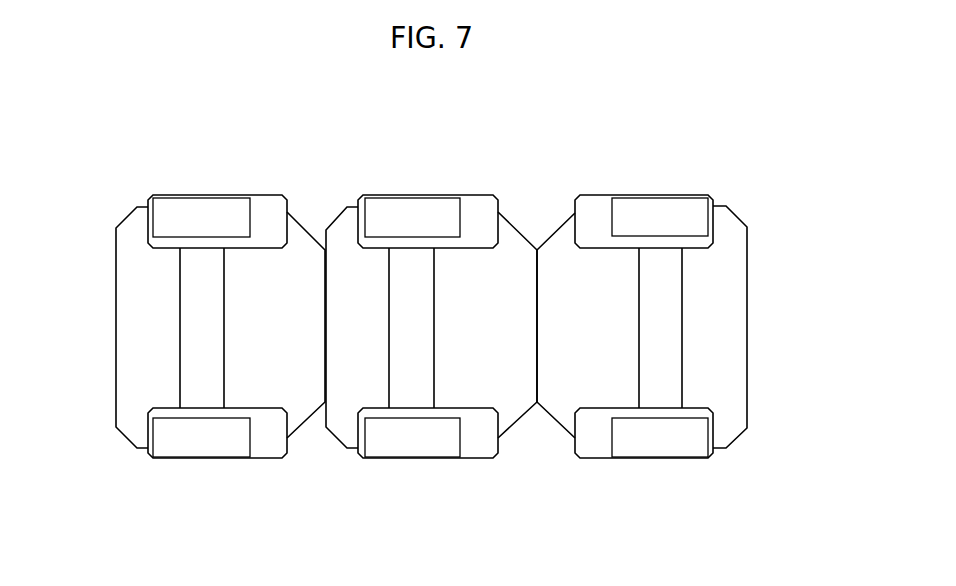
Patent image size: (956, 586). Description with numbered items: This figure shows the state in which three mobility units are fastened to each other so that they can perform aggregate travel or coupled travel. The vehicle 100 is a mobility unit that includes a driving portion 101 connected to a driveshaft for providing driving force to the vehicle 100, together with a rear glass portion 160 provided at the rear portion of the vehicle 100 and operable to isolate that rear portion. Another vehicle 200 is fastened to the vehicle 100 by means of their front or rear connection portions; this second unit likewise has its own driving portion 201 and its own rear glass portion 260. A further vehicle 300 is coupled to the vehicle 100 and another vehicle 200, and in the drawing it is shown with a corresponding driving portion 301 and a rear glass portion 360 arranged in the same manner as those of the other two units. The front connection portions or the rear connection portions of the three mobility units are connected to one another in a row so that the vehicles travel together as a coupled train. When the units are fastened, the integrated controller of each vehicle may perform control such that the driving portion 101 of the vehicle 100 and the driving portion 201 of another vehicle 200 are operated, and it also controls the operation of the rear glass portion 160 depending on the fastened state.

The vehicle 100 is at (212, 184).
The driving portion 101 is at (205, 336).
The rear glass portion 160 is at (318, 329).
The another vehicle 200 is at (431, 180).
The driving portion 201 is at (403, 297).
The rear glass portion 260 is at (526, 311).
The further vehicle 300 is at (650, 178).
The third module body 301 is at (665, 333).
The third module coupling portion 360 is at (550, 311).